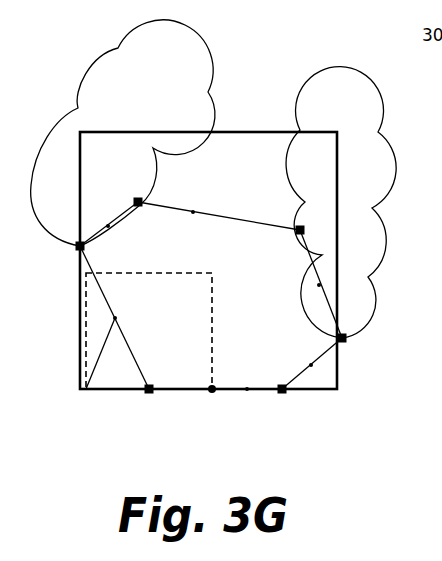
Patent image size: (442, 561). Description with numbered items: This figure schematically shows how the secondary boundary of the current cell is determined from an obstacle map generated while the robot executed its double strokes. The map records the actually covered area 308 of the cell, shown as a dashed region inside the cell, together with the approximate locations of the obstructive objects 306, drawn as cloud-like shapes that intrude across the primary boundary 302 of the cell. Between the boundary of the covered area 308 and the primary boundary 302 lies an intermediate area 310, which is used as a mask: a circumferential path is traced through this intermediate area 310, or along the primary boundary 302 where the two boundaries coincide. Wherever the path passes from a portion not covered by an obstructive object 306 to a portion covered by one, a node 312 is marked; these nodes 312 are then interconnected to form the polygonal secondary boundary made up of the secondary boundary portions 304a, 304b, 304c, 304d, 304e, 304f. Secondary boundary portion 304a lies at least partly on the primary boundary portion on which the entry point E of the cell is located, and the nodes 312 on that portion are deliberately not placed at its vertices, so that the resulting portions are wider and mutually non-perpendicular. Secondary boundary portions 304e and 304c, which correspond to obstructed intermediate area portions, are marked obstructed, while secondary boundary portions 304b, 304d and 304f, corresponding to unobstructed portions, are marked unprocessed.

The primary boundary 302 is at (208, 132).
The secondary boundary portion 304a is at (247, 390).
The secondary boundary portion 304b is at (312, 366).
The secondary boundary portion 304c is at (320, 285).
The secondary boundary portion 304d is at (193, 212).
The secondary boundary portion 304e is at (108, 226).
The secondary boundary portion 304f is at (86, 392).
The obstructive object 306 is at (213, 179).
The actually covered area 308 is at (86, 331).
The intermediate area 310 is at (253, 190).
The node 312 is at (78, 248).
The entry point E is at (213, 393).